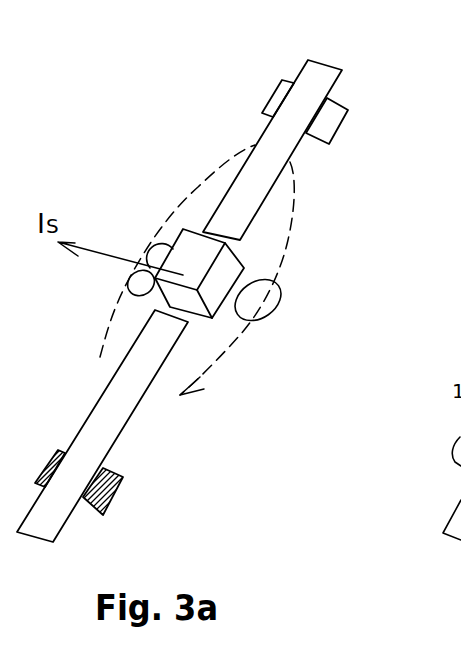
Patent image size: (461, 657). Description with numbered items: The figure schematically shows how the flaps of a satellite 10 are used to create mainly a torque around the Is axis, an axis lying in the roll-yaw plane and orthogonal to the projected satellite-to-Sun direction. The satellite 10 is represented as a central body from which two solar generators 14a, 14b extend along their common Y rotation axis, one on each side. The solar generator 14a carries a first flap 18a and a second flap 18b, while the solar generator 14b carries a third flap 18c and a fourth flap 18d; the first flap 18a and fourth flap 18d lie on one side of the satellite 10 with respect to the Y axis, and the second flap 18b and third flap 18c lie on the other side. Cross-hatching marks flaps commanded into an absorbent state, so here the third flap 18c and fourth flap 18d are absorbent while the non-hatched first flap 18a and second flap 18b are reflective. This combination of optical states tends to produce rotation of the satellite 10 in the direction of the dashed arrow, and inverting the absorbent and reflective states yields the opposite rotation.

The satellite 10 is at (252, 355).
The solar generator 14a is at (295, 152).
The solar generator 14b is at (118, 437).
The first flap 18a is at (277, 100).
The second flap 18b is at (337, 123).
The third flap 18c is at (113, 495).
The fourth flap 18d is at (47, 467).